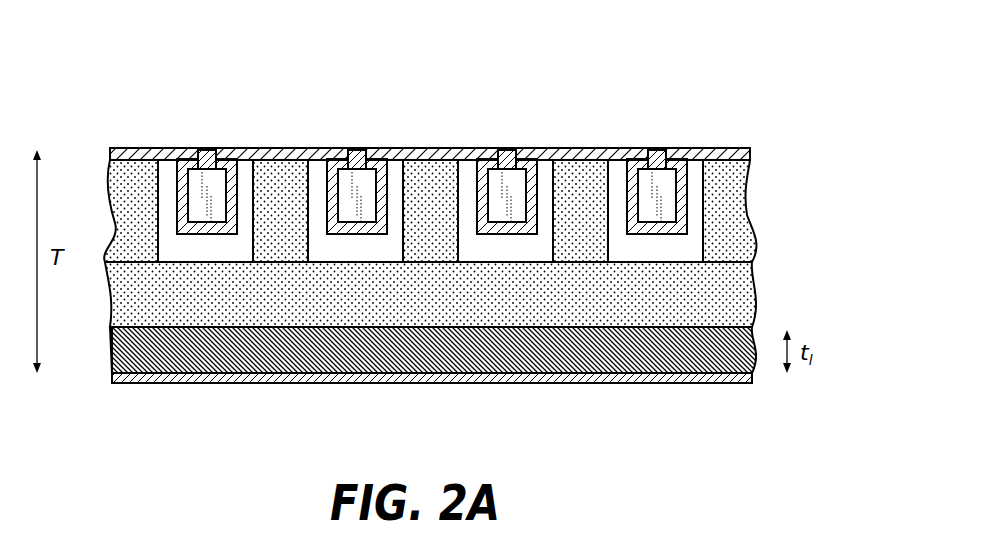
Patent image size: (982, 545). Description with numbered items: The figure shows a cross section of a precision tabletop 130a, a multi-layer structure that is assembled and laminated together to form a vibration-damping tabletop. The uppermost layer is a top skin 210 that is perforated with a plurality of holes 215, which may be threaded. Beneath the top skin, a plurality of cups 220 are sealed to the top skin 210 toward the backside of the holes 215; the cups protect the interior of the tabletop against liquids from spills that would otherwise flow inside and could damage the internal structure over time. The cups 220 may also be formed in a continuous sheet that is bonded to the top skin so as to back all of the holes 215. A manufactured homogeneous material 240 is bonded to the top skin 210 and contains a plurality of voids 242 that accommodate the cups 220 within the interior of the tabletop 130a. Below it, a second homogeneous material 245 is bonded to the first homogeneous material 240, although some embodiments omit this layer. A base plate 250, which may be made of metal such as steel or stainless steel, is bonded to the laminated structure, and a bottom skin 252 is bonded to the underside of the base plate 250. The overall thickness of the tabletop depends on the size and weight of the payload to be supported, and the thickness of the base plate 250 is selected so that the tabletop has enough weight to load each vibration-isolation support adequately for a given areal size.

The precision tabletop 130a is at (720, 68).
The top skin 210 is at (168, 148).
The holes 215 is at (203, 148).
The cups 220 is at (472, 172).
The voids 242 is at (540, 177).
The manufactured homogeneous material 240 is at (735, 235).
The second homogeneous material 245 is at (733, 310).
The base plate 250 is at (112, 350).
The bottom skin 252 is at (263, 384).